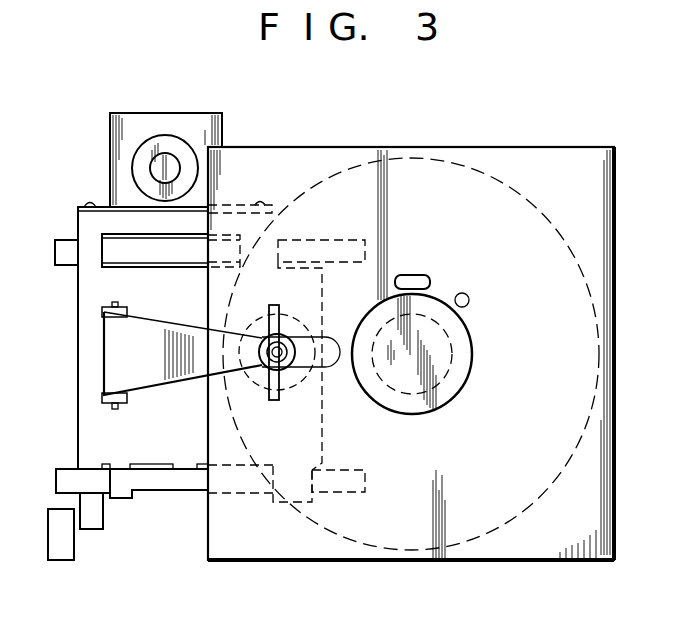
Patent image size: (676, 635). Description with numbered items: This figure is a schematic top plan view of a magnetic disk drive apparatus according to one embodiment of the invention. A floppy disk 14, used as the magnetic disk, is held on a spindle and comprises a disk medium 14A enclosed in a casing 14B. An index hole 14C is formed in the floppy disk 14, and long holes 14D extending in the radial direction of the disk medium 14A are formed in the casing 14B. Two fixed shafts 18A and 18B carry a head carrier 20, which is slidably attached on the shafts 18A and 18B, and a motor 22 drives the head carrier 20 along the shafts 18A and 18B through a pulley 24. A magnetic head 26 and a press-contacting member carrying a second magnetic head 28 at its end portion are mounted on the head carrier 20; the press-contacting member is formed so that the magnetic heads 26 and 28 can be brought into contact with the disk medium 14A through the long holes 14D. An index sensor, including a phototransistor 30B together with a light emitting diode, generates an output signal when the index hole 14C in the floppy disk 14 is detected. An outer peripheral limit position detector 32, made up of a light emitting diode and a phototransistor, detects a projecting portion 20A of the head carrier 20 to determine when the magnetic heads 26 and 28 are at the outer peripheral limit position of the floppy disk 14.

The floppy disk 14 is at (560, 145).
The disk medium 14A is at (562, 230).
The casing 14B is at (483, 147).
The index hole 14C is at (462, 293).
The long holes 14D is at (332, 337).
The fixed shaft 18A is at (62, 240).
The fixed shaft 18B is at (64, 469).
The head carrier 20 is at (78, 392).
The projecting portion 20A is at (93, 532).
The motor 22 is at (110, 137).
The pulley 24 is at (172, 137).
The magnetic head 26 is at (296, 388).
The magnetic head 28 is at (146, 388).
The phototransistor 30B is at (408, 273).
The outer peripheral limit position detector 32 is at (61, 552).